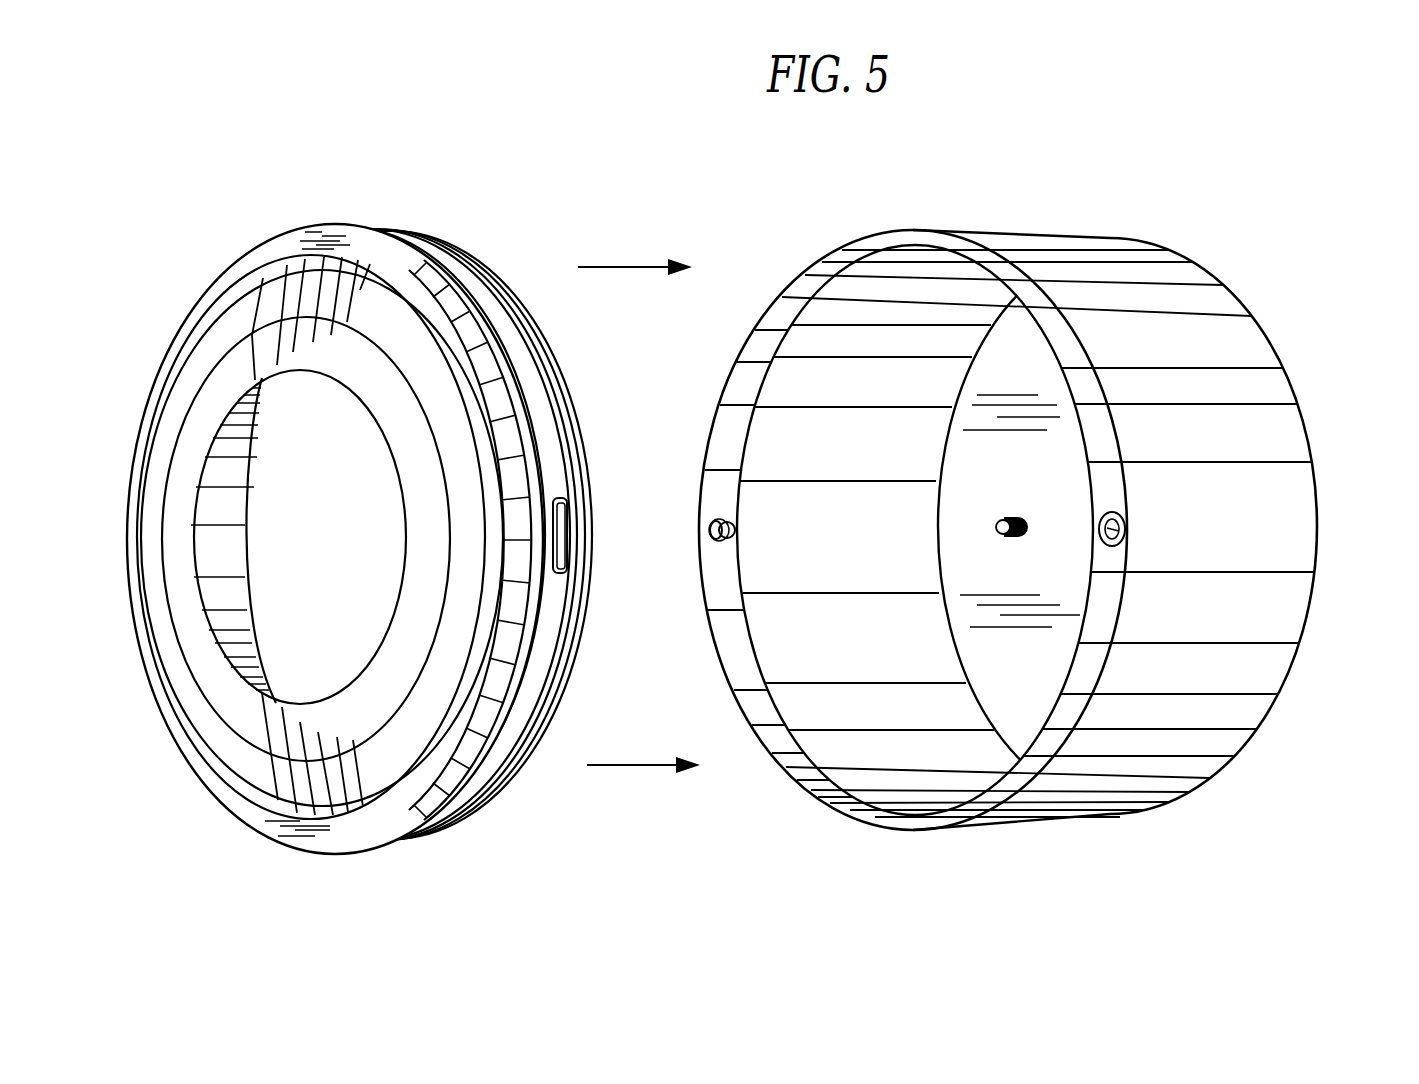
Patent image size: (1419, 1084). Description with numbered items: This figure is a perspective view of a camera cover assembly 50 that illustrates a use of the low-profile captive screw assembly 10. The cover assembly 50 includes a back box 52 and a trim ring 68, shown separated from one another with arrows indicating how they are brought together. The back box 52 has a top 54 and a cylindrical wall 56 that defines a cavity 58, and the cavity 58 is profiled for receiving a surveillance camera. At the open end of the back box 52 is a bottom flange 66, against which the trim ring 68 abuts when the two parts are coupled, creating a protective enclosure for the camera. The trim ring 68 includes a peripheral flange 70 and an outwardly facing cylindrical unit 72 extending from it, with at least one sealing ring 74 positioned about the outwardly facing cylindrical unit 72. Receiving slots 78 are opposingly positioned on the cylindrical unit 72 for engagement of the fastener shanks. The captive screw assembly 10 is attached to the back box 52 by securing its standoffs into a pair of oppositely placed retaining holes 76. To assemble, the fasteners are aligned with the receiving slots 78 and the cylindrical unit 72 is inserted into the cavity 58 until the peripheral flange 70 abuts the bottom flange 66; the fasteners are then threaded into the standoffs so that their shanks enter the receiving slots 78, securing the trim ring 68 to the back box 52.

The captive screw assembly 10 is at (710, 527).
The camera cover assembly 50 is at (603, 203).
The back box 52 is at (1033, 190).
The top 54 is at (1294, 671).
The cylindrical wall 56 is at (1209, 341).
The cavity 58 is at (817, 705).
The bottom flange 66 is at (820, 255).
The trim ring 68 is at (257, 203).
The peripheral flange 70 is at (342, 220).
The outwardly facing cylindrical unit 72 is at (493, 797).
The sealing ring 74 is at (430, 243).
The retaining holes 76 is at (712, 543).
The receiving slots 78 is at (565, 542).